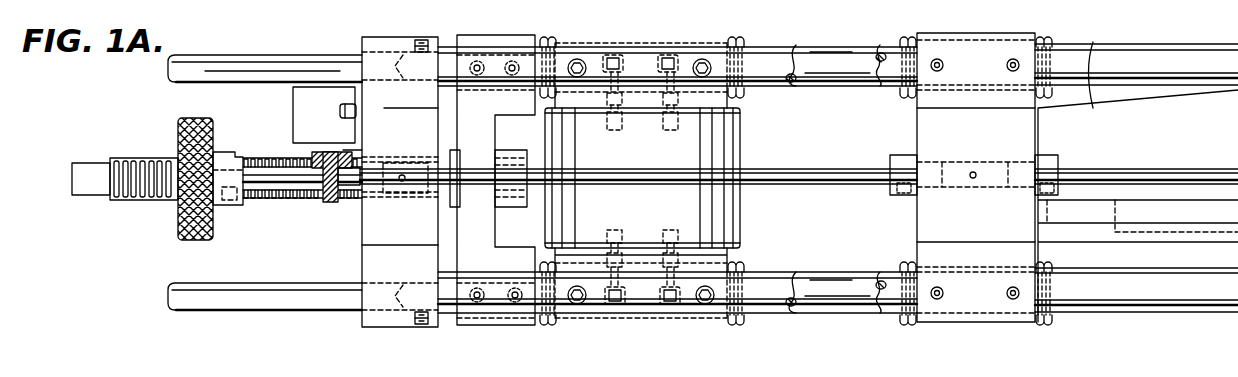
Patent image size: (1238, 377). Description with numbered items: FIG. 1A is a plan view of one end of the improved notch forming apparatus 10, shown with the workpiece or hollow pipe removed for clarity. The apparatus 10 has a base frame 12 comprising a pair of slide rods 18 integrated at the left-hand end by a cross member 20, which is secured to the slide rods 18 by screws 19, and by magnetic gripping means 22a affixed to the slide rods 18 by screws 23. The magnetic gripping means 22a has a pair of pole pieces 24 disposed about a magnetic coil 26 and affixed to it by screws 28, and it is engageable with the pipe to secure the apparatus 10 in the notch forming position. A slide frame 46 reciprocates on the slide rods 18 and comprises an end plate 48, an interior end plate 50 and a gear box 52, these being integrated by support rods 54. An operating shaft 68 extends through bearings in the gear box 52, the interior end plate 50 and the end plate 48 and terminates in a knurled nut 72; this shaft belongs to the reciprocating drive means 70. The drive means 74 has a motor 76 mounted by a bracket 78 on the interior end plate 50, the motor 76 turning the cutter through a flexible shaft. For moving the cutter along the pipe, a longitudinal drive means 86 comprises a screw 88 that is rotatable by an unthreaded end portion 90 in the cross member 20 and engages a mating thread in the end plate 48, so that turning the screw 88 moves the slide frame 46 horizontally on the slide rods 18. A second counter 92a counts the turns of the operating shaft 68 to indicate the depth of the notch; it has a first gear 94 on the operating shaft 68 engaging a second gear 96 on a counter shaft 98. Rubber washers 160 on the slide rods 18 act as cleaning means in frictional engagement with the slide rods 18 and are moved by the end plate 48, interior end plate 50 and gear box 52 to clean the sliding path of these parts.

The notch forming apparatus 10 is at (879, 322).
The base frame 12 is at (320, 316).
The slide rods 18 is at (305, 55).
The screws 19 is at (514, 87).
The cross member 20 is at (505, 327).
The magnetic gripping means 22a is at (713, 325).
The screws 23 is at (596, 40).
The pole pieces 24 is at (656, 42).
The magnetic coil 26 is at (685, 213).
The screws 28 is at (664, 123).
The slide frame 46 is at (421, 336).
The end plate 48 is at (424, 137).
The interior end plate 50 is at (988, 227).
The gear box 52 is at (397, 111).
The support rods 54 is at (882, 90).
The operating shaft 68 is at (838, 185).
The reciprocating drive means 70 is at (175, 211).
The knurled nut 72 is at (178, 143).
The drive means 74 is at (1203, 142).
The motor 76 is at (1097, 63).
The bracket 78 is at (1118, 245).
The longitudinal drive means 86 is at (91, 156).
The screw 88 is at (125, 200).
The unthreaded end portion 90 is at (516, 207).
The second counter 92a is at (305, 107).
The first gear 94 is at (334, 203).
The second gear 96 is at (312, 156).
The counter shaft 98 is at (362, 152).
The rubber washers 160 is at (1038, 36).